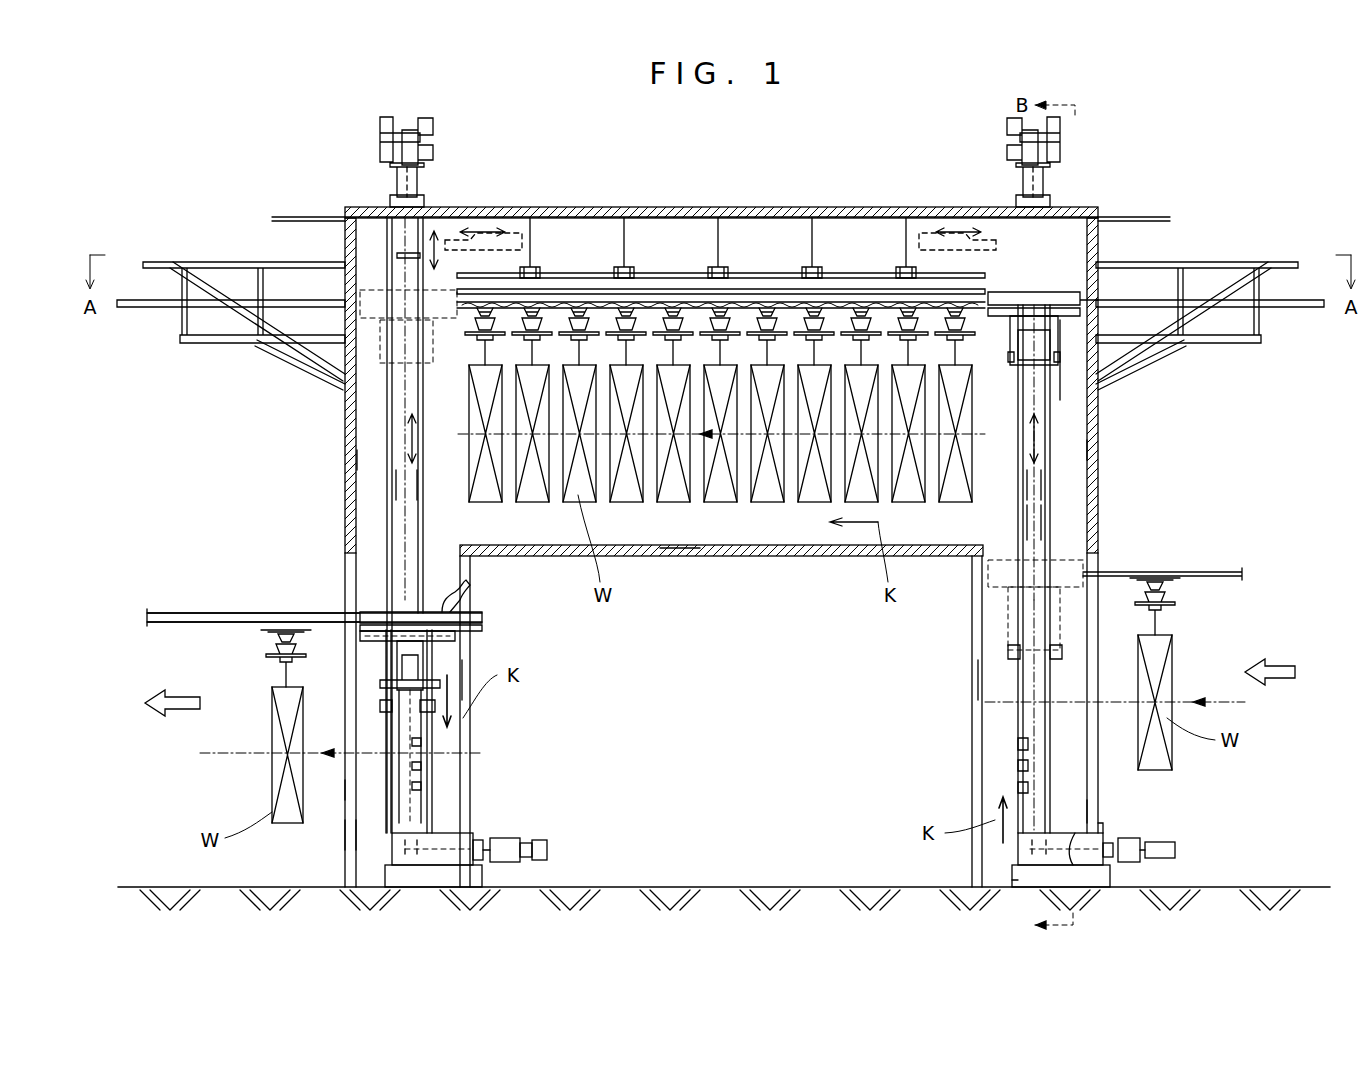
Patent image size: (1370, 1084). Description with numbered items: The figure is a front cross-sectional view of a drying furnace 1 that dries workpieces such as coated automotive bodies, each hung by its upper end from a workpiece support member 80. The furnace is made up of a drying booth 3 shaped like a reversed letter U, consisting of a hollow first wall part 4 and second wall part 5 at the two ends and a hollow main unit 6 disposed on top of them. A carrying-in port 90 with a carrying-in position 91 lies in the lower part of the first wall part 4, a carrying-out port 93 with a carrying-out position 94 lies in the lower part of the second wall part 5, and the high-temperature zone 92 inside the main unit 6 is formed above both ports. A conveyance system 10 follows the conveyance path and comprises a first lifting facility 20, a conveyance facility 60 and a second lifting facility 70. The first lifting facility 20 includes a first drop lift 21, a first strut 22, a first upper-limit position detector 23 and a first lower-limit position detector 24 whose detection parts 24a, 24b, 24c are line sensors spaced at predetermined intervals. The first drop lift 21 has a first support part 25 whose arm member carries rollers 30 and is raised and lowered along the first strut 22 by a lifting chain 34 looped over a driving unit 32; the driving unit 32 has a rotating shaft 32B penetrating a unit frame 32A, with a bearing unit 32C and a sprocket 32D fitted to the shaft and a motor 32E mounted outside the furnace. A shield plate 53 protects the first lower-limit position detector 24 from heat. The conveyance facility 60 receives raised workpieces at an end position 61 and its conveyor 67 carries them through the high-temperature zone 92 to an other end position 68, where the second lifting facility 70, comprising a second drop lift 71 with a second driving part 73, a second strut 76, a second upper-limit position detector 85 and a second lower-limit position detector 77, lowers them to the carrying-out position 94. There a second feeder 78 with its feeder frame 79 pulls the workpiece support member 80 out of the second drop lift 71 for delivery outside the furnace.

The drying furnace 1 is at (1115, 175).
The drying booth 3 is at (800, 735).
The first wall part 4 is at (975, 680).
The second wall part 5 is at (470, 680).
The main unit 6 is at (680, 548).
The conveyance system 10 is at (800, 138).
The first lifting facility 20 is at (1004, 236).
The first drop lift 21 is at (1068, 335).
The first strut 22 is at (1040, 520).
The first upper-limit position detector 23 is at (1010, 128).
The first lower-limit position detector 24 is at (905, 705).
The detection part 24a is at (1017, 742).
The detection part 24b is at (1017, 765).
The detection part 24c is at (1017, 787).
The first support part 25 is at (1068, 300).
The rollers 30 is at (1068, 372).
The driving unit 32 is at (1180, 832).
The unit frame 32A is at (1078, 840).
The rotating shaft 32B is at (1095, 887).
The bearing unit 32C is at (985, 893).
The sprocket 32D is at (1030, 868).
The motor 32E is at (1155, 862).
The lifting chain 34 is at (395, 540).
The shield plate 53 is at (1040, 478).
The conveyance facility 60 is at (693, 250).
The end position 61 is at (1056, 449).
The conveyor 67 is at (752, 298).
The other end position 68 is at (436, 489).
The second lifting facility 70 is at (445, 228).
The second drop lift 71 is at (375, 618).
The second driving part 73 is at (512, 830).
The second strut 76 is at (410, 485).
The second lower-limit position detector 77 is at (422, 786).
The second feeder 78 is at (497, 622).
The feeder frame 79 is at (452, 605).
The workpiece support member 80 is at (466, 335).
The second upper-limit position detector 85 is at (385, 128).
The carrying-in port 90 is at (1120, 805).
The carrying-in position 91 is at (1054, 811).
The high-temperature zone 92 is at (708, 531).
The carrying-out port 93 is at (343, 830).
The carrying-out position 94 is at (390, 803).